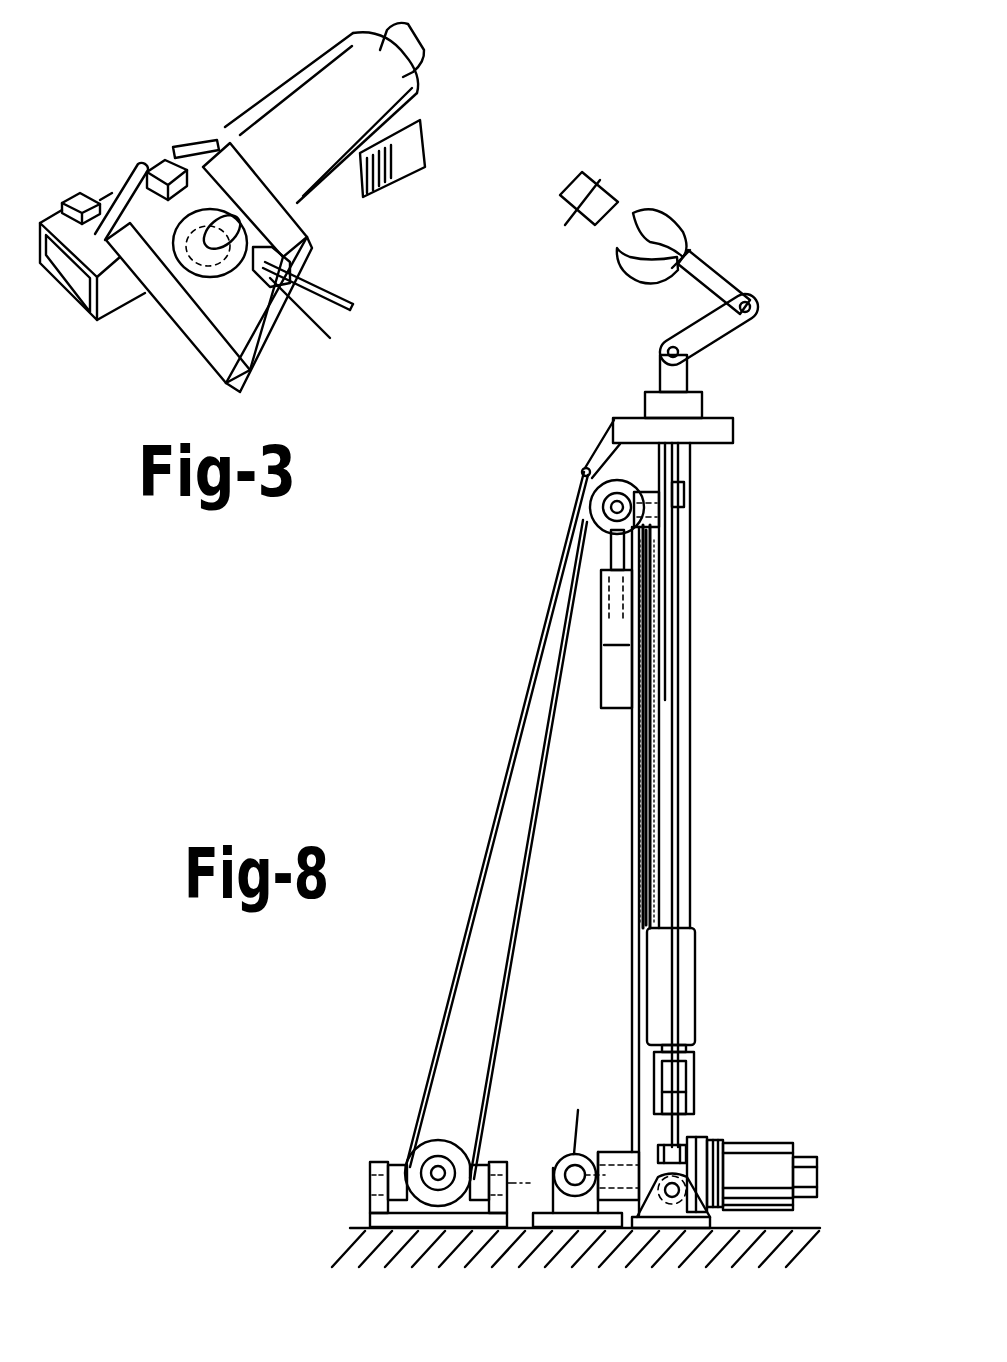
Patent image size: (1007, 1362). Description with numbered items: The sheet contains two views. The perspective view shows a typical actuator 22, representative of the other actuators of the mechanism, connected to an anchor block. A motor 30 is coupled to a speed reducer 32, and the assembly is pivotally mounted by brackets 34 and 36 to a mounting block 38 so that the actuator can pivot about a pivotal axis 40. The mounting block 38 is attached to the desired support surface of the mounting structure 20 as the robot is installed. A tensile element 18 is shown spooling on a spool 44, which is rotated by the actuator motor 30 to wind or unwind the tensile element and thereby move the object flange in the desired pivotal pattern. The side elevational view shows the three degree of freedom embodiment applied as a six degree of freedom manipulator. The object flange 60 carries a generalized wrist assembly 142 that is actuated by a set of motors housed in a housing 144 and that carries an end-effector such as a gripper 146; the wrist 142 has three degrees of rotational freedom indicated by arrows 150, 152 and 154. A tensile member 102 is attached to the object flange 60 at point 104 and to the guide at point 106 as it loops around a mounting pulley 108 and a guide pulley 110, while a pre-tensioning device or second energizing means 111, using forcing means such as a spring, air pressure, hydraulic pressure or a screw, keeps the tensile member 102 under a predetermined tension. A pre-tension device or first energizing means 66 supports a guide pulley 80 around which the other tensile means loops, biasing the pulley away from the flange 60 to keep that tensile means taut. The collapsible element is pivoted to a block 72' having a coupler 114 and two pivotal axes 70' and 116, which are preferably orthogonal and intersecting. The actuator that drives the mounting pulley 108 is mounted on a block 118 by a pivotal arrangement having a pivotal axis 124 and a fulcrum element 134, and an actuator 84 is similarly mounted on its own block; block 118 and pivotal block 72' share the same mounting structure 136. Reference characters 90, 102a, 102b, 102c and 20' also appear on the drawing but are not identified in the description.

In FIG. 3, the tensile element 18 is at (362, 276).
In FIG. 3, the mounting structure 20 is at (418, 159).
In FIG. 3, the actuator 22 is at (267, 93).
In FIG. 3, the motor 30 is at (420, 92).
In FIG. 3, the speed reducer 32 is at (326, 208).
In FIG. 3, the bracket 34 is at (160, 160).
In FIG. 3, the bracket 36 is at (332, 338).
In FIG. 3, the mounting block 38 is at (167, 317).
In FIG. 3, the pivotal axis 40 is at (138, 166).
In FIG. 3, the spool 44 is at (227, 272).
In FIG. 8, the object flange 60 is at (628, 418).
In FIG. 8, the pre-tension device 66 is at (702, 922).
In FIG. 8, the guide pulley 80 is at (683, 1120).
In FIG. 8, the actuator 84 is at (773, 1140).
In FIG. 8, the clamp 90 is at (686, 493).
In FIG. 8, the tensile member 102 is at (487, 785).
In FIG. 8, the cable strand 102a is at (485, 845).
In FIG. 8, the cable strand 102b is at (540, 797).
In FIG. 8, the cable strand 102c is at (648, 835).
In FIG. 8, the attachment point 104 is at (582, 472).
In FIG. 8, the attachment point 106 is at (647, 932).
In FIG. 8, the mounting pulley 108 is at (433, 1137).
In FIG. 8, the guide pulley 110 is at (590, 507).
In FIG. 8, the pre-tensioning device 111 is at (598, 618).
In FIG. 8, the coupler 114 is at (575, 1140).
In FIG. 8, the pivotal axis 116 is at (580, 1165).
In FIG. 8, the block 118 is at (370, 1208).
In FIG. 8, the pivotal axis 124 is at (370, 1183).
In FIG. 8, the fulcrum element 134 is at (485, 1155).
In FIG. 8, the mounting structure 136 is at (358, 1246).
In FIG. 8, the wrist assembly 142 is at (733, 261).
In FIG. 8, the housing 144 is at (700, 405).
In FIG. 8, the gripper 146 is at (675, 222).
In FIG. 8, the arrow 150 is at (652, 306).
In FIG. 8, the arrow 152 is at (767, 267).
In FIG. 8, the arrow 154 is at (622, 176).
In FIG. 8, the pillow block 20' is at (637, 1221).
In FIG. 8, the pivotal axis 70' is at (583, 1160).
In FIG. 8, the pivotal block 72' is at (542, 1255).